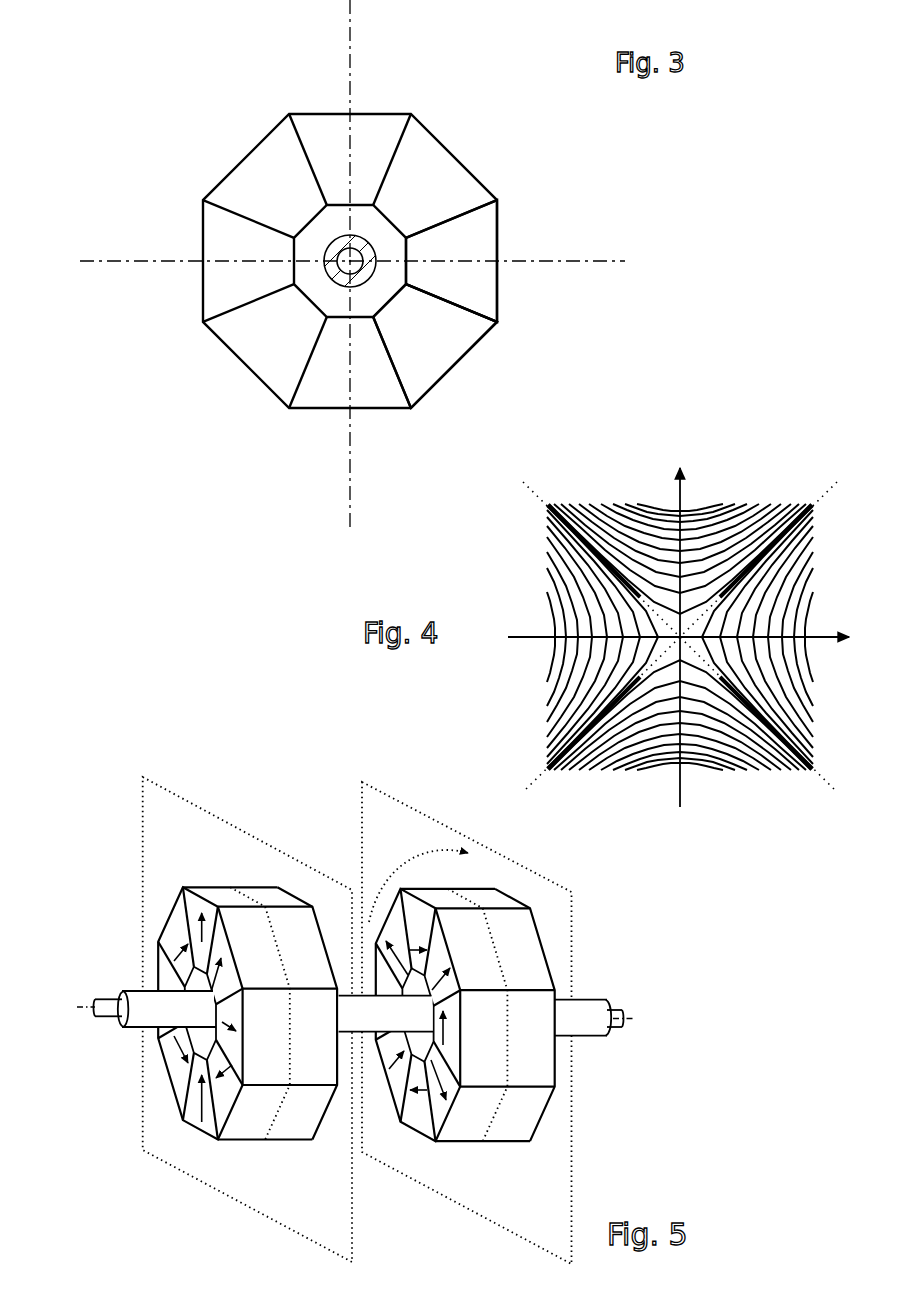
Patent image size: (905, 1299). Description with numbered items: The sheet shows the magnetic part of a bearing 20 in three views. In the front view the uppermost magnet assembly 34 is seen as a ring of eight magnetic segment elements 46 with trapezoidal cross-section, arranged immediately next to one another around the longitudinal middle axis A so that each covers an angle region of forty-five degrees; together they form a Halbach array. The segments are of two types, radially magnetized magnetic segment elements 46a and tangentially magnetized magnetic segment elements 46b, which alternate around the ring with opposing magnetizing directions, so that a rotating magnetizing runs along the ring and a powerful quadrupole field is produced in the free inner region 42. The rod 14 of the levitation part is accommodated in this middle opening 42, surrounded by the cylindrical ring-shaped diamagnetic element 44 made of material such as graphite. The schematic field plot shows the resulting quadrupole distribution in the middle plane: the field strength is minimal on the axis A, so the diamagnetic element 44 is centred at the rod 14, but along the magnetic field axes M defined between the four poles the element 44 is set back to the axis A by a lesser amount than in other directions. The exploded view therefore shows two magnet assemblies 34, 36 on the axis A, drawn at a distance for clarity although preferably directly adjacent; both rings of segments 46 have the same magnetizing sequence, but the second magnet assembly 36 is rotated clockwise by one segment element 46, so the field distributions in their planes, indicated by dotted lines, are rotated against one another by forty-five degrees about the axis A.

In FIG. 3, the rod 14 is at (337, 263).
In FIG. 5, the rod 14 is at (108, 1000).
In FIG. 3, the bearing 20 is at (157, 90).
In FIG. 3, the magnet assembly 34 is at (602, 185).
In FIG. 5, the magnet assembly 34 is at (202, 845).
In FIG. 5, the second magnet assembly 36 is at (472, 838).
In FIG. 3, the middle opening 42 is at (373, 223).
In FIG. 5, the middle opening 42 is at (200, 1037).
In FIG. 3, the diamagnetic element 44 is at (330, 283).
In FIG. 5, the diamagnetic element 44 is at (143, 1002).
In FIG. 3, the magnetic segment elements 46 is at (632, 332).
In FIG. 5, the magnetic segment elements 46 is at (293, 937).
In FIG. 3, the radially magnetized magnetic segment element 46a is at (480, 293).
In FIG. 3, the tangentially magnetized magnetic segment element 46b is at (437, 330).
In FIG. 3, the longitudinal middle axis A is at (348, 252).
In FIG. 4, the longitudinal middle axis A is at (653, 607).
In FIG. 5, the longitudinal middle axis A is at (92, 1005).
In FIG. 4, the magnetic field axes M is at (533, 490).